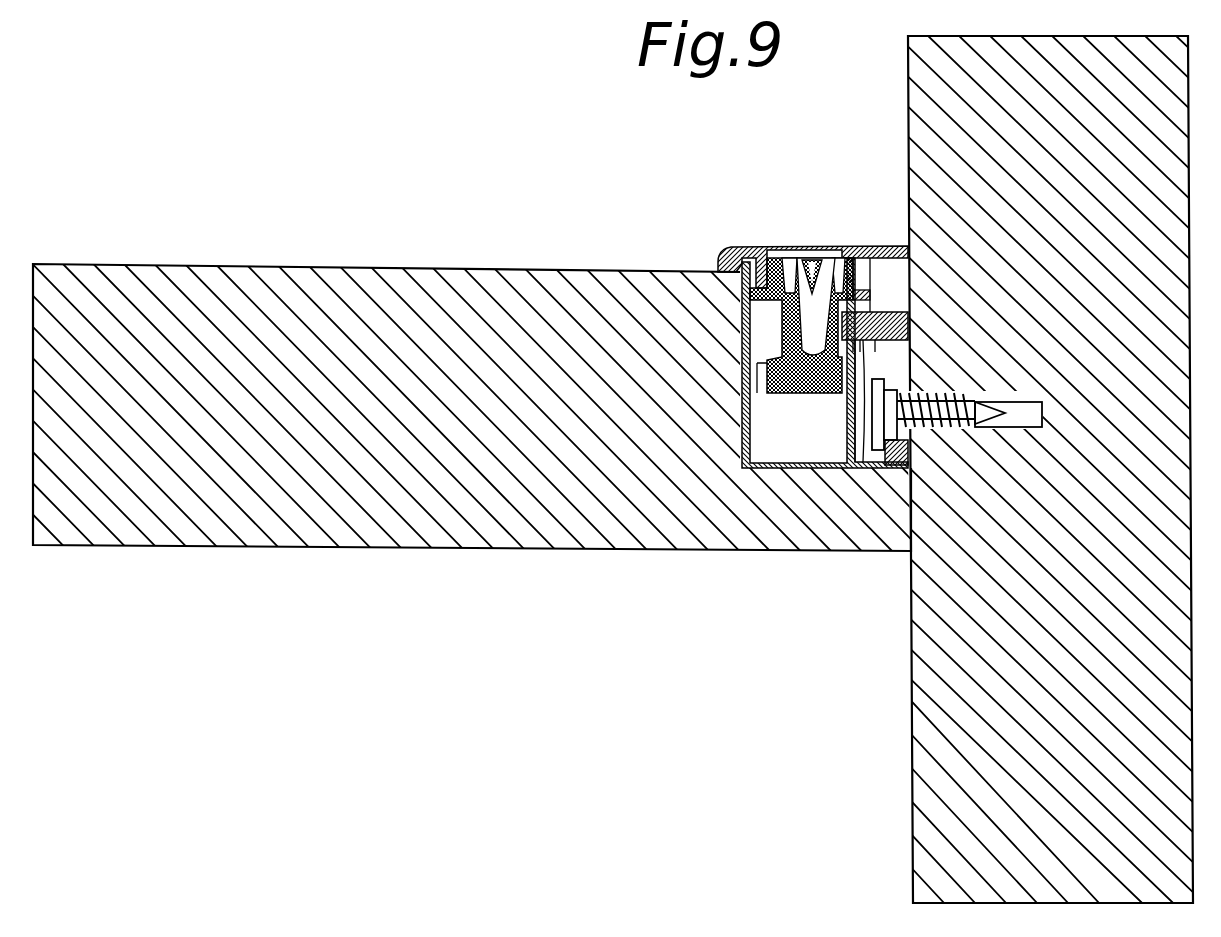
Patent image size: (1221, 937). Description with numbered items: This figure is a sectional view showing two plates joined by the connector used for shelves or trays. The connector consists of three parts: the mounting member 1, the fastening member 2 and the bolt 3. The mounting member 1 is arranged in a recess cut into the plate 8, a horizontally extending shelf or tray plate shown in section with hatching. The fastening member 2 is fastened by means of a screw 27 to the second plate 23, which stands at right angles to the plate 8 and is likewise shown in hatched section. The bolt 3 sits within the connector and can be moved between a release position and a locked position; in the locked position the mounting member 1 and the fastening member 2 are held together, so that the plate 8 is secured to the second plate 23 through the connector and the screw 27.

The mounting member 1 is at (750, 387).
The fastening member 2 is at (853, 246).
The bolt 3 is at (812, 377).
The plate 8 is at (432, 288).
The second plate 23 is at (925, 103).
The screw 27 is at (967, 428).